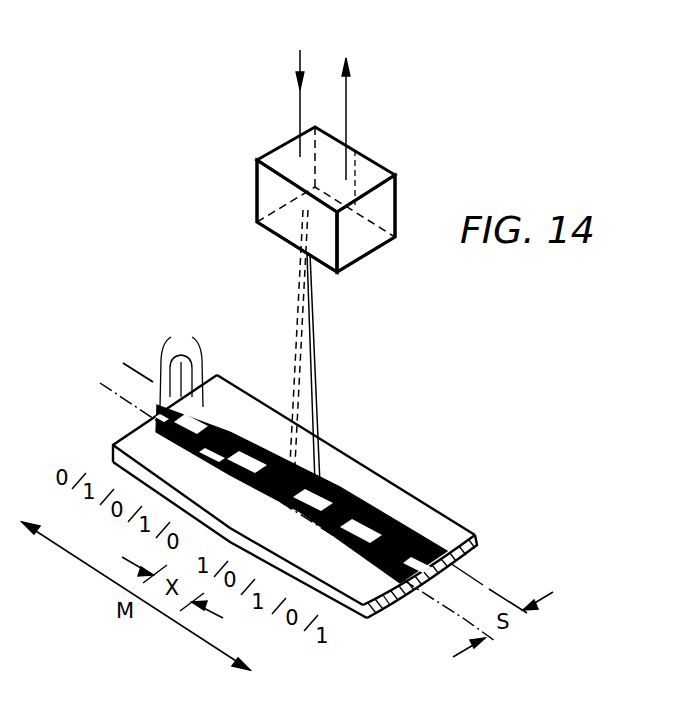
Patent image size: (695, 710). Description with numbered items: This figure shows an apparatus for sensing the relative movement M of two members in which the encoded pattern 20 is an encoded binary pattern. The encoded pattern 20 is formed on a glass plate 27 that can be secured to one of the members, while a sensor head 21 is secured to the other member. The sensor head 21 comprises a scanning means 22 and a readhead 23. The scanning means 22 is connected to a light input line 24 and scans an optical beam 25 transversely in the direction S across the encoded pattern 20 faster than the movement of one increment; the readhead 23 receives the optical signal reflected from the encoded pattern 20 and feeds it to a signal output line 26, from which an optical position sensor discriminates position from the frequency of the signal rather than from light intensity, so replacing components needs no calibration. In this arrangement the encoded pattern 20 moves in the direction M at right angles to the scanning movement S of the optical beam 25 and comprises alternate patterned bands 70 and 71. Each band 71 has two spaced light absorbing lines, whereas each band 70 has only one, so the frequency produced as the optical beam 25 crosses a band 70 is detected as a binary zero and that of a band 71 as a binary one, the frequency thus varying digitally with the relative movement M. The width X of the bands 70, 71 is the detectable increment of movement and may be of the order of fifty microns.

The encoded pattern 20 is at (181, 369).
The sensor head 21 is at (363, 141).
The scanning means 22 is at (262, 185).
The readhead 23 is at (373, 173).
The light input line 24 is at (298, 64).
The optical beam 25 is at (301, 343).
The signal output line 26 is at (348, 84).
The glass plate 27 is at (388, 480).
The patterned band 70 is at (240, 432).
The patterned band 71 is at (222, 470).